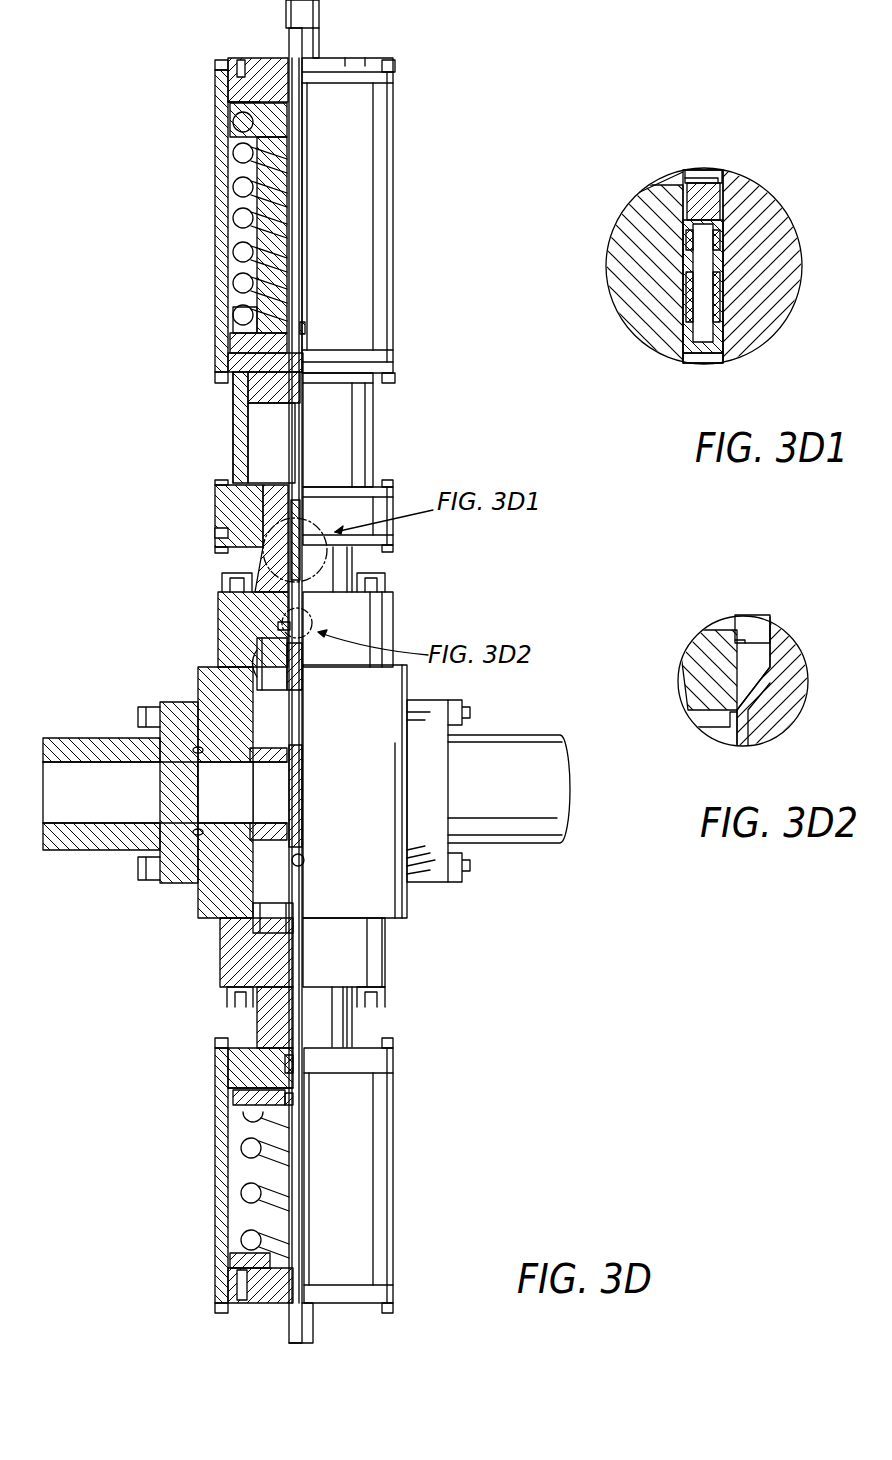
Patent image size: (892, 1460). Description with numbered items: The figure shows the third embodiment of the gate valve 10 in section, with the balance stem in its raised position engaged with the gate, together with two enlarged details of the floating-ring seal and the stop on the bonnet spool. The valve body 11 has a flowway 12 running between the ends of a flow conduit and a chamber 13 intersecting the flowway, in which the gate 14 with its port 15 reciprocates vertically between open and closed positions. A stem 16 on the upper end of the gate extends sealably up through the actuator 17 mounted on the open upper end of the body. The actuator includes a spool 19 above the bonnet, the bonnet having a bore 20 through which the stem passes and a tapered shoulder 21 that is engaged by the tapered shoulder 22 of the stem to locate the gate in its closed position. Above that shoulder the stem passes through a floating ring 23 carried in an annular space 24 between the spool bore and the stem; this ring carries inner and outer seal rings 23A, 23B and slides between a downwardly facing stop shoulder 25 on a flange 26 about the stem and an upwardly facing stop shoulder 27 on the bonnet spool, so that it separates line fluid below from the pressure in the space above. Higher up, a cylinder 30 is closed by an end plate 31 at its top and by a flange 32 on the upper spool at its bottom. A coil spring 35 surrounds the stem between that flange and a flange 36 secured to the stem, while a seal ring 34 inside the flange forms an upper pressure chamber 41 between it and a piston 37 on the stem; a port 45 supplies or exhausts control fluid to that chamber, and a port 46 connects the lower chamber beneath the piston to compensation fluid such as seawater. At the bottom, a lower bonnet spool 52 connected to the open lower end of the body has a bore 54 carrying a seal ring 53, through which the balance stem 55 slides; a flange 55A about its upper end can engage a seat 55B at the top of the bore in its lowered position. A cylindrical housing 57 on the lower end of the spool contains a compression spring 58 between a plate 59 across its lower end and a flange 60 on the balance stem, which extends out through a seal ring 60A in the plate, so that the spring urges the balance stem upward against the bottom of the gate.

In FIG. 3D, the valve 10 is at (391, 627).
In FIG. 3D, the valve body 11 is at (198, 685).
In FIG. 3D, the flowway 12 is at (175, 880).
In FIG. 3D, the chamber 13 is at (273, 873).
In FIG. 3D, the gate 14 is at (262, 803).
In FIG. 3D, the port 15 is at (297, 718).
In FIG. 3D, the stem 16 is at (257, 590).
In FIG. 3D, the actuator 17 is at (235, 420).
In FIG. 3D, the spool 19 is at (378, 428).
In FIG. 3D, the bore 20 is at (305, 625).
In FIG. 3D, the tapered shoulder 21 is at (286, 627).
In FIG. 3D, the tapered shoulder 22 is at (286, 638).
In FIG. 3D1, the floating ring 23 is at (723, 258).
In FIG. 3D1, the inner seal ring 23A is at (723, 297).
In FIG. 3D1, the outer seal ring 23B is at (683, 305).
In FIG. 3D1, the annular space 24 is at (703, 170).
In FIG. 3D2, the annular space 24 is at (752, 627).
In FIG. 3D1, the stop shoulder 25 is at (708, 218).
In FIG. 3D1, the flange 26 is at (683, 203).
In FIG. 3D1, the stop shoulder 27 is at (702, 355).
In FIG. 3D2, the stop shoulder 27 is at (735, 632).
In FIG. 3D, the cylinder 30 is at (393, 170).
In FIG. 3D, the end plate 31 is at (265, 58).
In FIG. 3D, the flange 32 is at (232, 283).
In FIG. 3D, the seal ring 34 is at (305, 325).
In FIG. 3D, the coil spring 35 is at (228, 213).
In FIG. 3D, the flange 36 is at (234, 96).
In FIG. 3D, the piston 37 is at (260, 358).
In FIG. 3D, the upper pressure chamber 41 is at (305, 350).
In FIG. 3D, the port 45 is at (235, 360).
In FIG. 3D, the port 46 is at (222, 533).
In FIG. 3D, the spool 52 is at (350, 1023).
In FIG. 3D, the seal ring 53 is at (297, 1063).
In FIG. 3D, the bore 54 is at (304, 970).
In FIG. 3D, the balance stem 55 is at (303, 1175).
In FIG. 3D, the flange 55A is at (306, 868).
In FIG. 3D, the seat 55B is at (224, 998).
In FIG. 3D, the cylindrical housing 57 is at (395, 1222).
In FIG. 3D, the compression spring 58 is at (241, 1191).
In FIG. 3D, the plate 59 is at (232, 1265).
In FIG. 3D, the flange 60 is at (230, 1088).
In FIG. 3D, the seal ring 60A is at (289, 1300).